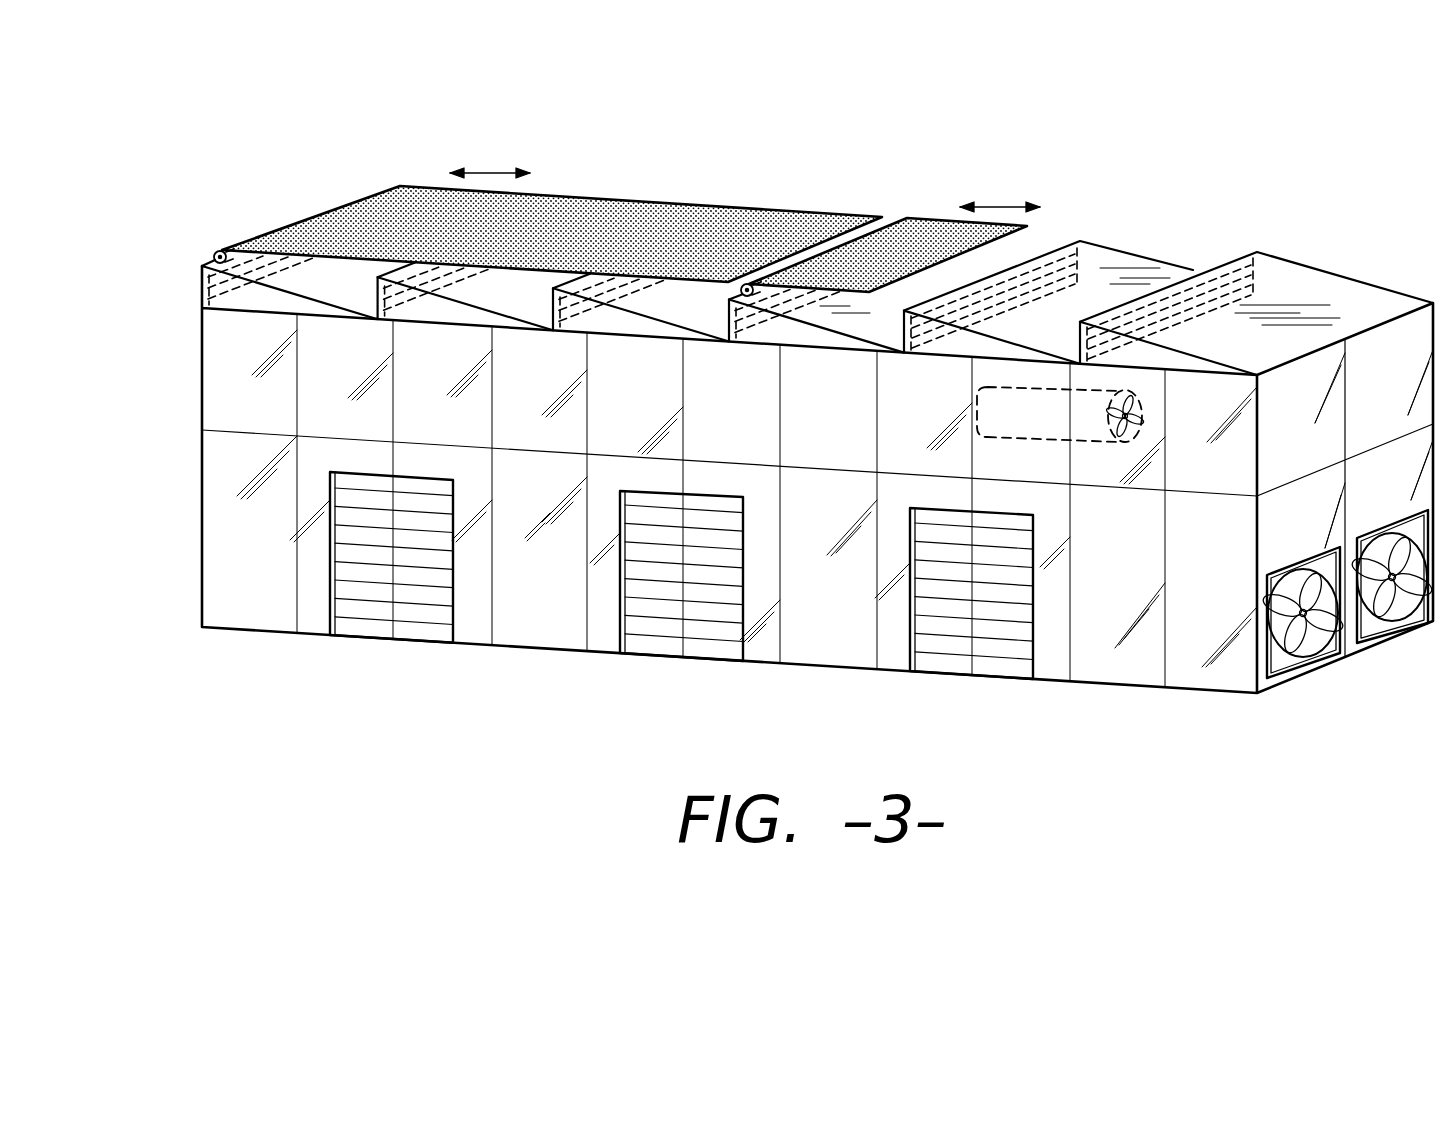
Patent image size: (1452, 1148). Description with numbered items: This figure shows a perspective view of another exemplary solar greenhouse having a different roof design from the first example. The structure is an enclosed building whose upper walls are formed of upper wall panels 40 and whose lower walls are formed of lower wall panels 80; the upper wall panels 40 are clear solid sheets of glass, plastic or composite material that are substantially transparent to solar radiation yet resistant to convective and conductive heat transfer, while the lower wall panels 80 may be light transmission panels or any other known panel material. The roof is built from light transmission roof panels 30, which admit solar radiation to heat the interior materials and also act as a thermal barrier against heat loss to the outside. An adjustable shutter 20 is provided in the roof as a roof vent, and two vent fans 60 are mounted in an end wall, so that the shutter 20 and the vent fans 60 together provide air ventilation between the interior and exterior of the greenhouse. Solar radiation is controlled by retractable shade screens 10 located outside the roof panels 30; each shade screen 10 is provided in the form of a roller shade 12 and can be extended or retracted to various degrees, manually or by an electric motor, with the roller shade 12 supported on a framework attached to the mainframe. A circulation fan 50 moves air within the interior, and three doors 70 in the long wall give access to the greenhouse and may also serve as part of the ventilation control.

The retractable shade screen 10 is at (612, 206).
The roller shade 12 is at (214, 255).
The adjustable shutter 20 is at (1227, 262).
The light transmission roof panel 30 is at (1307, 282).
The upper wall panel 40 is at (415, 418).
The circulation fan 50 is at (1124, 399).
The vent fan 60 is at (1313, 643).
The door 70 is at (402, 612).
The lower wall panel 80 is at (1192, 647).